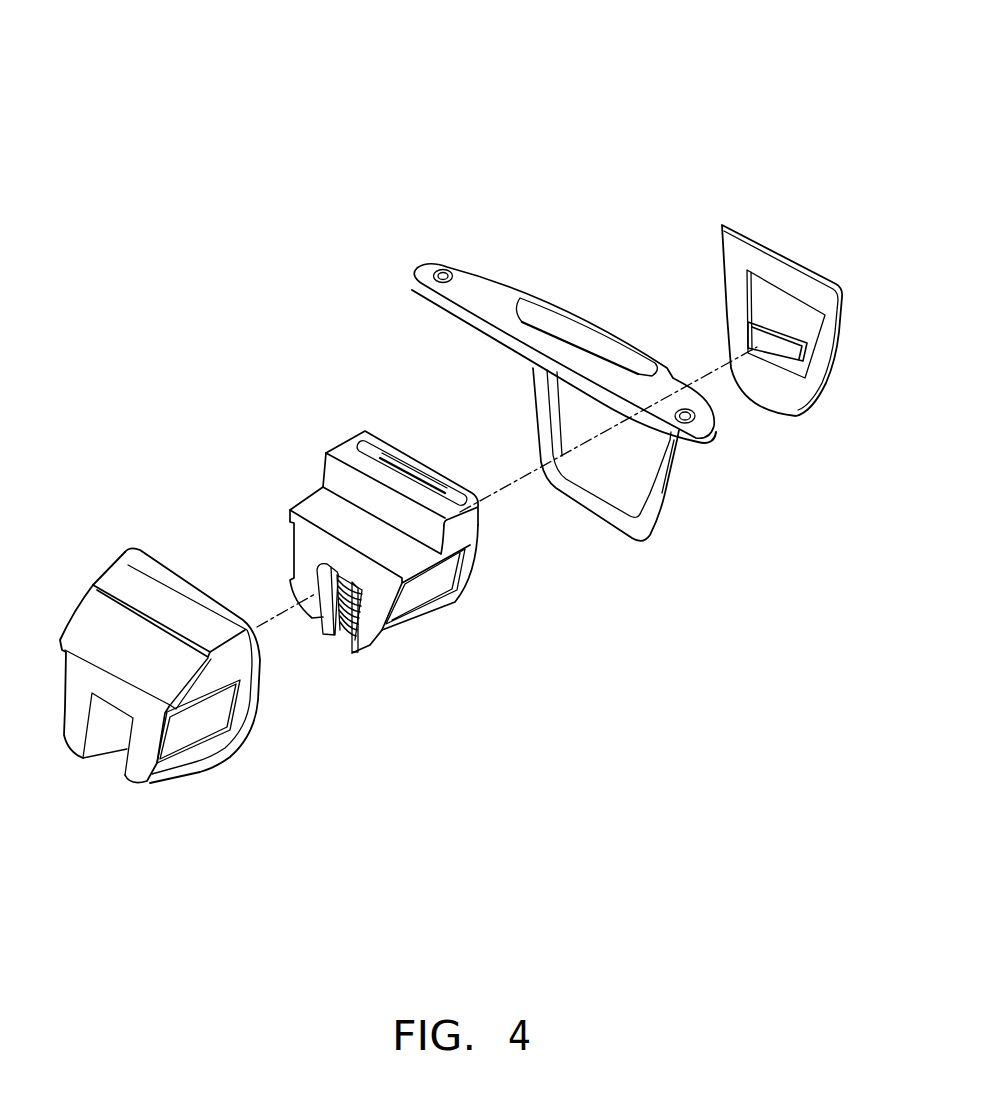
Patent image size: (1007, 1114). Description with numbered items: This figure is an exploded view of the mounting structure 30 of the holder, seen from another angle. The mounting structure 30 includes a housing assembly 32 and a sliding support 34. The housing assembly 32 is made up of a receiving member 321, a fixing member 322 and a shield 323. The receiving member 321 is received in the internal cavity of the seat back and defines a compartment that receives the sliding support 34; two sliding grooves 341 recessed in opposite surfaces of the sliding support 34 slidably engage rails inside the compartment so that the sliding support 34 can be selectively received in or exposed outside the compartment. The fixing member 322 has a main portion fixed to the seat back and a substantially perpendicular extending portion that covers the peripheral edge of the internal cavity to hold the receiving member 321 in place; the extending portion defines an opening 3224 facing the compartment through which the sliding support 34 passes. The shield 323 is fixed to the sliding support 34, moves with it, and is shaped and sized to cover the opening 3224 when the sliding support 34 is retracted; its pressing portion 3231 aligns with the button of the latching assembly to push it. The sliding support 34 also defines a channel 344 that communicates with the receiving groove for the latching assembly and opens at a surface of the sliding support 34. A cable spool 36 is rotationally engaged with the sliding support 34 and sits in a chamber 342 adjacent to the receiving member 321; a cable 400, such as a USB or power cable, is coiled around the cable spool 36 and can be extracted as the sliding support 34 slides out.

The mounting structure 30 is at (489, 35).
The housing assembly 32 is at (648, 131).
The receiving member 321 is at (165, 557).
The fixing member 322 is at (470, 290).
The opening 3224 is at (572, 421).
The shield 323 is at (710, 243).
The pressing portion 3231 is at (792, 358).
The sliding support 34 is at (327, 510).
The sliding grooves 341 is at (417, 590).
The chamber 342 is at (327, 575).
The channel 344 is at (470, 507).
The cable spool 36 is at (322, 623).
The cable 400 is at (343, 617).